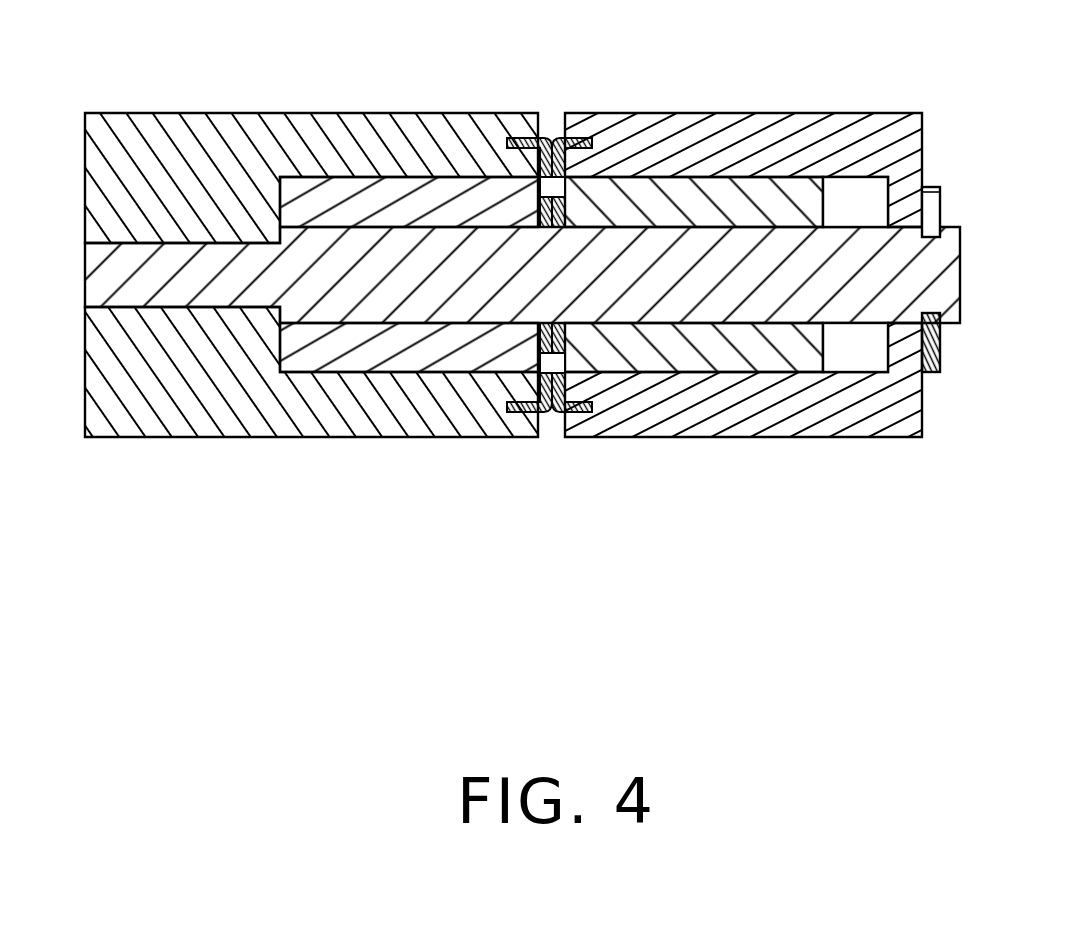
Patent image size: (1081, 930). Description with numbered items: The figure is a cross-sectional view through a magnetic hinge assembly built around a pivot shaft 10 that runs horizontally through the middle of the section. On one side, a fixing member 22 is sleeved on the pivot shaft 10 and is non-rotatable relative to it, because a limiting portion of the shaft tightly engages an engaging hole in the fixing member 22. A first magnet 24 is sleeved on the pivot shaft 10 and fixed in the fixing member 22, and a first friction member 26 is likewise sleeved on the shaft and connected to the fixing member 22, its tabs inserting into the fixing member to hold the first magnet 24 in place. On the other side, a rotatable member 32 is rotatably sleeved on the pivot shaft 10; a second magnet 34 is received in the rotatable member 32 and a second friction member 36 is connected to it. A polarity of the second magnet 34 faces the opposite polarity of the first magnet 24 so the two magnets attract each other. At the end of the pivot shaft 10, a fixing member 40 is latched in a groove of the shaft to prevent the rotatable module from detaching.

The pivot shaft 10 is at (947, 277).
The fixing member 22 is at (185, 143).
The first magnet 24 is at (420, 200).
The first friction member 26 is at (525, 142).
The rotatable member 32 is at (907, 125).
The second magnet 34 is at (705, 187).
The second friction member 36 is at (565, 138).
The fixing member 40 is at (930, 210).